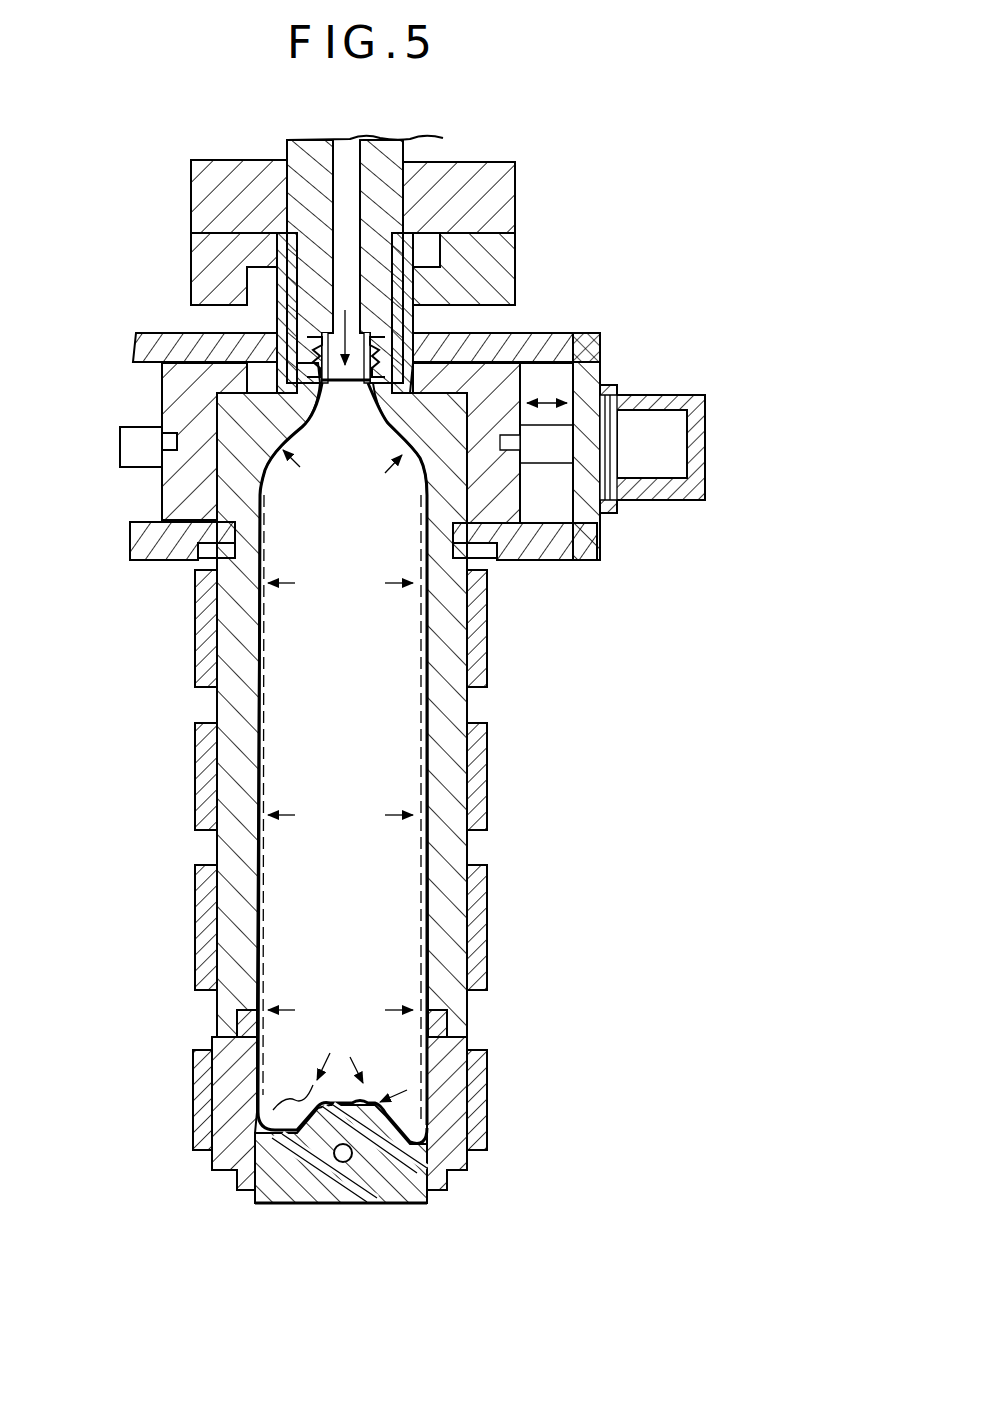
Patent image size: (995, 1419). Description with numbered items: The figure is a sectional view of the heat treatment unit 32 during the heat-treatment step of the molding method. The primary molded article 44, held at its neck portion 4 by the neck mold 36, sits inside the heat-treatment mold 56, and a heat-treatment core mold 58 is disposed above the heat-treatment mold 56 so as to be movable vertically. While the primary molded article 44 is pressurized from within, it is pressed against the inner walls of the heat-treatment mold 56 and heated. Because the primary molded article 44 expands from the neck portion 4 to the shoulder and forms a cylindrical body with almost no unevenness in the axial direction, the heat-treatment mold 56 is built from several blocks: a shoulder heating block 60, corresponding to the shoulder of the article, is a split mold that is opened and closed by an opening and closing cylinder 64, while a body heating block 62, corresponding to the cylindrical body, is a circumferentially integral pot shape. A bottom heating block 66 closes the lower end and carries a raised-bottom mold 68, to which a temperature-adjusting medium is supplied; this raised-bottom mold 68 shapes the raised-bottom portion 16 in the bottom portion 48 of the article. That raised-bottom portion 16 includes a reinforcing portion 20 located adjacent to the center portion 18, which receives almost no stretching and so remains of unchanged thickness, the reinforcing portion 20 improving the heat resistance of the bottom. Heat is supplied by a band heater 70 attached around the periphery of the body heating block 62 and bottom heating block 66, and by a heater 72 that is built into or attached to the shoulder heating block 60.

The neck portion 4 is at (413, 333).
The raised-bottom portion 16 is at (463, 1020).
The center portion 18 is at (343, 1105).
The reinforcing portion 20 is at (250, 1078).
The heat treatment unit 32 is at (593, 127).
The neck mold 36 is at (400, 300).
The primary molded article 44 is at (435, 690).
The bottom portion 48 is at (227, 1173).
The heat-treatment mold 56 is at (493, 622).
The heat-treatment core mold 58 is at (443, 138).
The shoulder heating block 60 is at (593, 352).
The body heating block 62 is at (450, 752).
The opening and closing cylinder 64 is at (657, 427).
The bottom heating block 66 is at (443, 1138).
The raised-bottom mold 68 is at (343, 1193).
The band heater 70 is at (487, 863).
The heater 72 is at (580, 373).